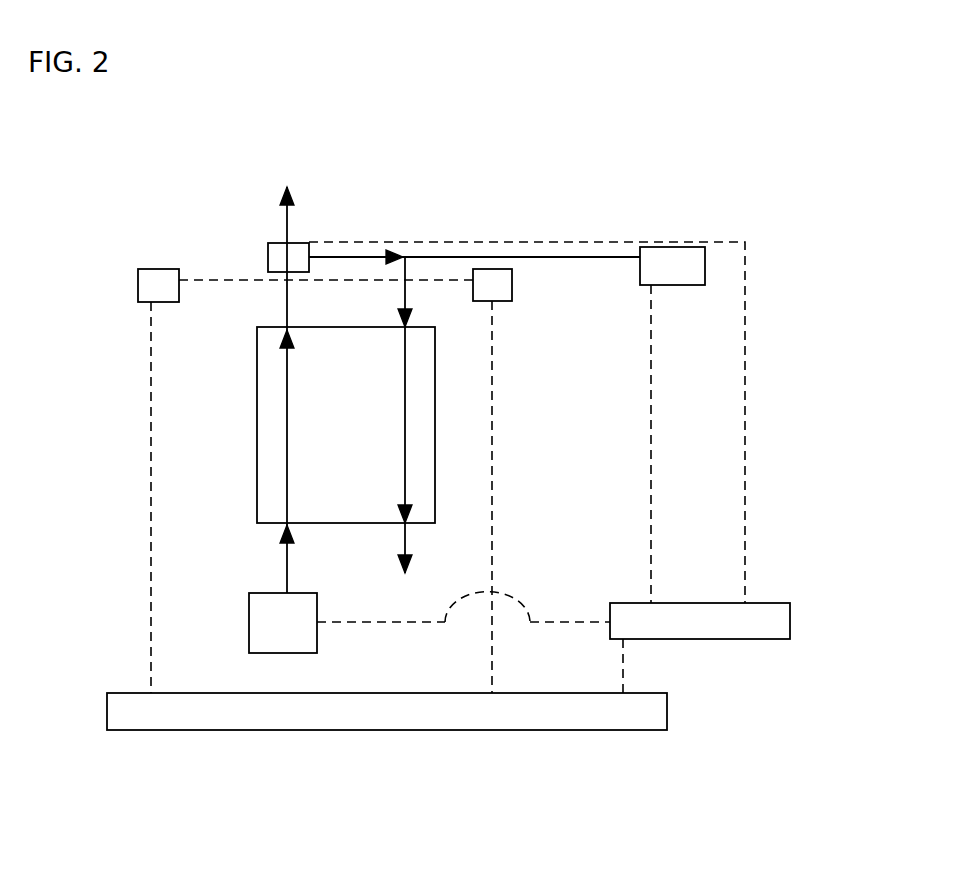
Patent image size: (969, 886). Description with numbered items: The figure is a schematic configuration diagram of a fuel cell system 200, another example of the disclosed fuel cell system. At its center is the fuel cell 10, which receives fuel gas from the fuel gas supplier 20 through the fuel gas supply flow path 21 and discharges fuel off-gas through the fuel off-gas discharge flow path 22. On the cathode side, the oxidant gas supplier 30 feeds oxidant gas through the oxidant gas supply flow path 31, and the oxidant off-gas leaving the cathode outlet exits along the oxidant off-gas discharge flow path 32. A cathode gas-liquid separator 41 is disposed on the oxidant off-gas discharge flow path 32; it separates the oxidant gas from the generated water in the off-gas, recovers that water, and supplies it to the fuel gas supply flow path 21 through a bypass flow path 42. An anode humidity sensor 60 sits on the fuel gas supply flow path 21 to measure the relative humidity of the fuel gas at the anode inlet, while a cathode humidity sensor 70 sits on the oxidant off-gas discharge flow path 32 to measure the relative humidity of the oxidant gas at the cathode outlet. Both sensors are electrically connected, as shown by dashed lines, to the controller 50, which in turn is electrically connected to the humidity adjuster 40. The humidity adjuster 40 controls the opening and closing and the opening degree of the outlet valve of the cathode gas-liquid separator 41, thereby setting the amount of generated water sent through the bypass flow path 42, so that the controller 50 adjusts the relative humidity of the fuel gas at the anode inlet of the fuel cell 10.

The fuel cell system 200 is at (758, 126).
The fuel cell 10 is at (258, 497).
The fuel gas supplier 20 is at (672, 285).
The fuel gas supply flow path 21 is at (568, 255).
The fuel off-gas discharge flow path 22 is at (405, 548).
The oxidant gas supplier 30 is at (249, 622).
The oxidant gas supply flow path 31 is at (287, 528).
The oxidant off-gas discharge flow path 32 is at (286, 298).
The humidity adjuster 40 is at (665, 639).
The cathode gas-liquid separator 41 is at (268, 262).
The bypass flow path 42 is at (340, 257).
The controller 50 is at (667, 706).
The anode humidity sensor 60 is at (512, 298).
The cathode humidity sensor 70 is at (137, 281).